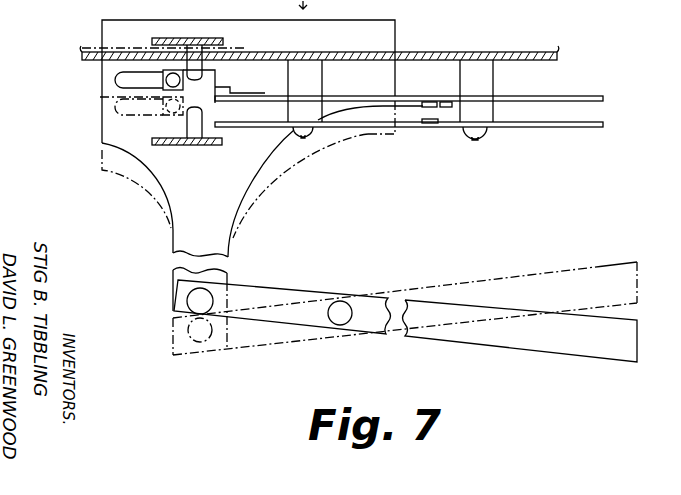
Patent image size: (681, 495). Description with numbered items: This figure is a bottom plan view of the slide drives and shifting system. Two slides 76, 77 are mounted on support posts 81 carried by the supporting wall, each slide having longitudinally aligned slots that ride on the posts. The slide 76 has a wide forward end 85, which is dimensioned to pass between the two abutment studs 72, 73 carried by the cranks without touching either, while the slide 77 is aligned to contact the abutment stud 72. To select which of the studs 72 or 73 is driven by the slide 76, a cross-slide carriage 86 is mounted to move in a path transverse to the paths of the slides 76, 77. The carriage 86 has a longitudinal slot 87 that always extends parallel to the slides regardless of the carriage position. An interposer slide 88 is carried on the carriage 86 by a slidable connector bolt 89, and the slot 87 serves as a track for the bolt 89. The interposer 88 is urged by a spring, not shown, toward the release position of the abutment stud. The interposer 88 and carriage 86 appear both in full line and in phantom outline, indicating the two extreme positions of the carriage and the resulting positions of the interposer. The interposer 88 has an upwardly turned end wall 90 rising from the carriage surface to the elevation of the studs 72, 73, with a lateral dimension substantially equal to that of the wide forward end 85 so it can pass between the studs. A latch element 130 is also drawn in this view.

The abutment stud 72 is at (188, 125).
The abutment stud 73 is at (221, 45).
The slide 76 is at (570, 96).
The slide 77 is at (577, 127).
The support post 81 is at (495, 80).
The wide forward end 85 is at (230, 88).
The cross-slide carriage 86 is at (232, 222).
The longitudinal slot 87 is at (117, 78).
The interposer slide 88 is at (163, 70).
The slidable connector bolt 89 is at (162, 86).
The upwardly turned end wall 90 is at (215, 76).
The latch 130 is at (449, 108).